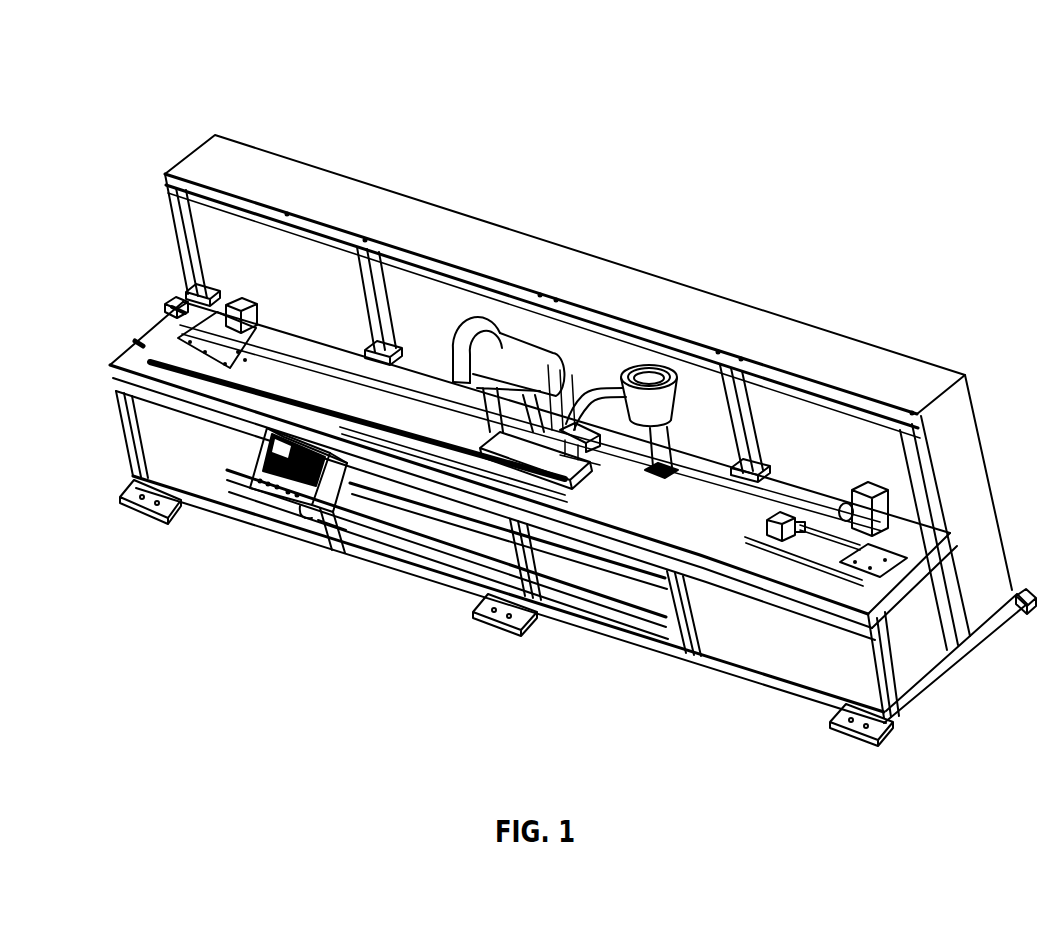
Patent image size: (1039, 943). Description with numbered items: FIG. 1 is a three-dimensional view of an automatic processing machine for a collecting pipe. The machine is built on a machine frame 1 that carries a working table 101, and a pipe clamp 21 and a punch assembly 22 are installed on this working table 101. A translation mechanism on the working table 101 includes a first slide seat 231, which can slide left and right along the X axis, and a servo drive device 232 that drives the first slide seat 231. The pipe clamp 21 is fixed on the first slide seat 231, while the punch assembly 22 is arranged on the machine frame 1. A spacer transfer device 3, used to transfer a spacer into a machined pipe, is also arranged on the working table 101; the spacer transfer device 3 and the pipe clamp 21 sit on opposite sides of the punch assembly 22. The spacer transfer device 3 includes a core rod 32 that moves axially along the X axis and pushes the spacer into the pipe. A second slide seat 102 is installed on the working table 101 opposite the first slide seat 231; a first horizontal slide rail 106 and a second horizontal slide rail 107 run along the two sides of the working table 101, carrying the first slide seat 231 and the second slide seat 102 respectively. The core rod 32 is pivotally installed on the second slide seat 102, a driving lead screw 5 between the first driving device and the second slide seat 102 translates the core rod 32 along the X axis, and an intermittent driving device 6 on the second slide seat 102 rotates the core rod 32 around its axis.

The machine frame 1 is at (363, 203).
The working table 101 is at (405, 447).
The second slide seat 102 is at (847, 567).
The first horizontal slide rail 106 is at (428, 430).
The second horizontal slide rail 107 is at (810, 563).
The pipe clamp 21 is at (236, 300).
The punch assembly 22 is at (523, 340).
The first slide seat 231 is at (207, 355).
The servo drive device 232 is at (170, 306).
The spacer transfer device 3 is at (596, 500).
The core rod 32 is at (687, 472).
The driving lead screw 5 is at (810, 530).
The intermittent driving device 6 is at (858, 490).